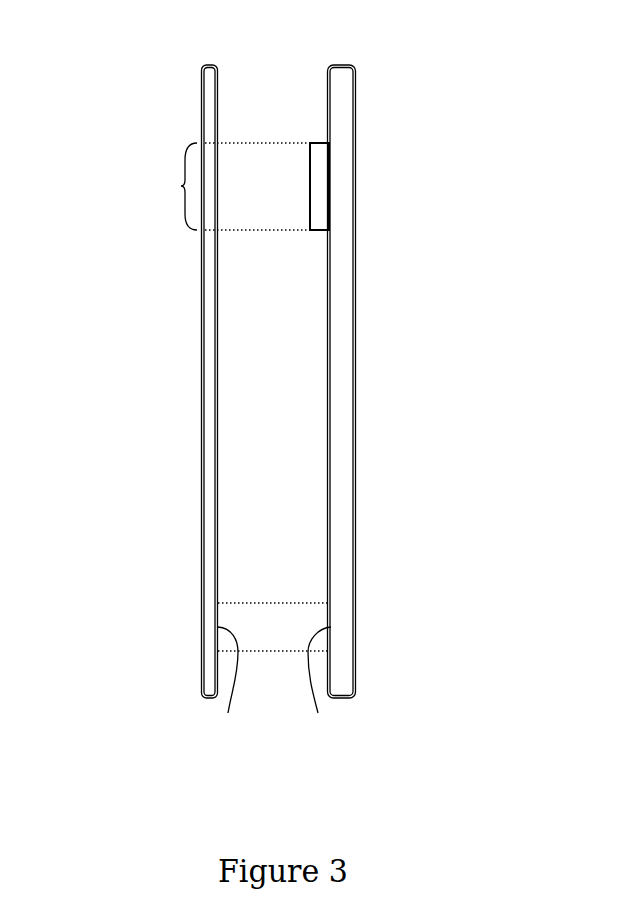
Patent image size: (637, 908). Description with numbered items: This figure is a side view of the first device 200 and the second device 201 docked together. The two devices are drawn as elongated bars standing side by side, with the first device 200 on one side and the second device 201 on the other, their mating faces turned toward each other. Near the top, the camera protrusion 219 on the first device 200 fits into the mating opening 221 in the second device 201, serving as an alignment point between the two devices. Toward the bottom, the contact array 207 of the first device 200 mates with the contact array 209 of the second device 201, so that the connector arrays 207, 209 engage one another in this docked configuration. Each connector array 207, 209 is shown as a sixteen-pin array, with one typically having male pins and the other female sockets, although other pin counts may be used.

The first device 200 is at (370, 396).
The second device 201 is at (154, 397).
The connector array 207 is at (318, 713).
The connector array 209 is at (228, 713).
The camera protrusion 219 is at (317, 161).
The mating opening 221 is at (182, 186).